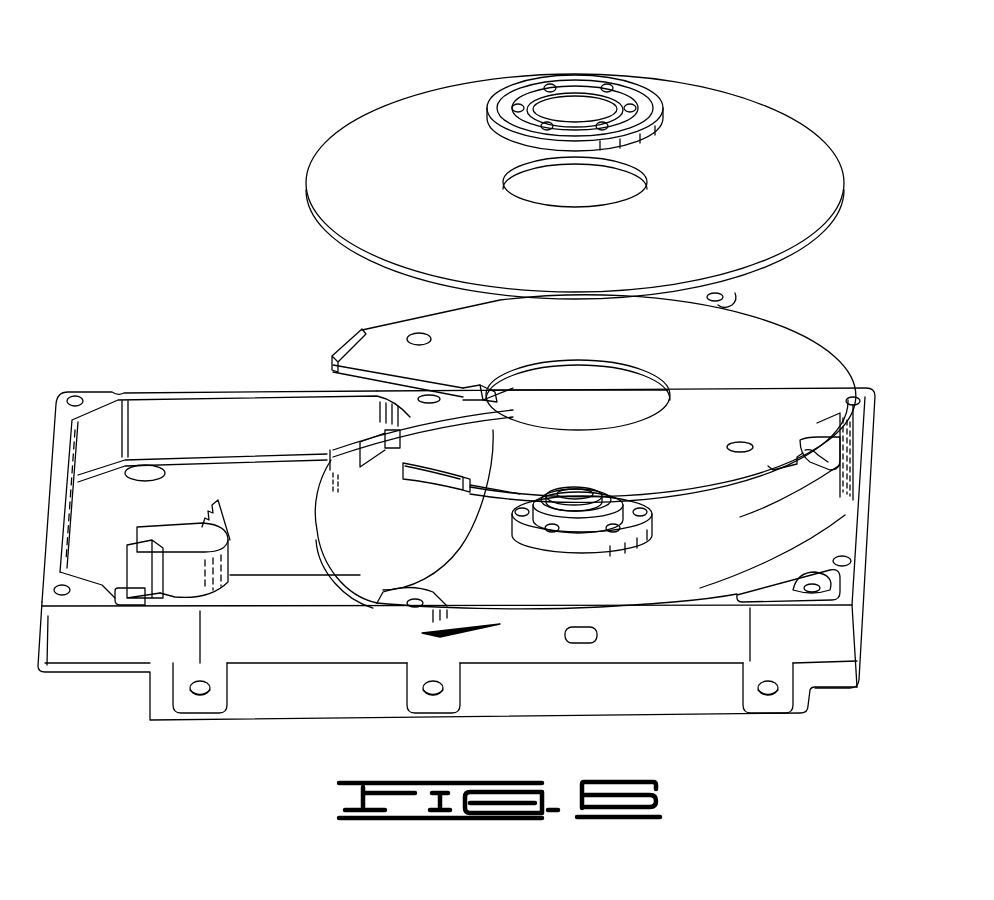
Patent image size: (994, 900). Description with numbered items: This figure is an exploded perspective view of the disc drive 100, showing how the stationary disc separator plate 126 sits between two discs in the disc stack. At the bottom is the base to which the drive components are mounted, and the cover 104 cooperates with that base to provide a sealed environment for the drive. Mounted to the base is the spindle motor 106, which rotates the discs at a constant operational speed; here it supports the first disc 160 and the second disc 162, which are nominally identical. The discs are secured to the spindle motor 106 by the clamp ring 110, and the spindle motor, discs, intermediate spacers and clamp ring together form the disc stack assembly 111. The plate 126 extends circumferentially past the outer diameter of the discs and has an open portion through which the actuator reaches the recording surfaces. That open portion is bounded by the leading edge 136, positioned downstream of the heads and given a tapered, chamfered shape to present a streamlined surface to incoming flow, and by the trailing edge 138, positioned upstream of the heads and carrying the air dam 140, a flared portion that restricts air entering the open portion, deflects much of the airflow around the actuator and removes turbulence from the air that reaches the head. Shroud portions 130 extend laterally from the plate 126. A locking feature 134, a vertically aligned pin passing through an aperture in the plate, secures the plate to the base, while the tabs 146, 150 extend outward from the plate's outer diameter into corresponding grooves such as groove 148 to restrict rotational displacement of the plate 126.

The disc drive 100 is at (245, 209).
The cover 104 is at (165, 393).
The spindle motor 106 is at (600, 548).
The clamp ring 110 is at (603, 70).
The disc stack assembly 111 is at (796, 86).
The stationary disc separator plate 126 is at (775, 352).
The shroud portions 130 is at (333, 350).
The locking feature 134 is at (730, 292).
The leading edge 136 is at (468, 547).
The trailing edge 138 is at (433, 390).
The air dam 140 is at (455, 384).
The tab 146 is at (378, 320).
The groove 148 is at (360, 420).
The tab 150 is at (787, 458).
The first disc 160 is at (375, 155).
The second disc 162 is at (747, 545).